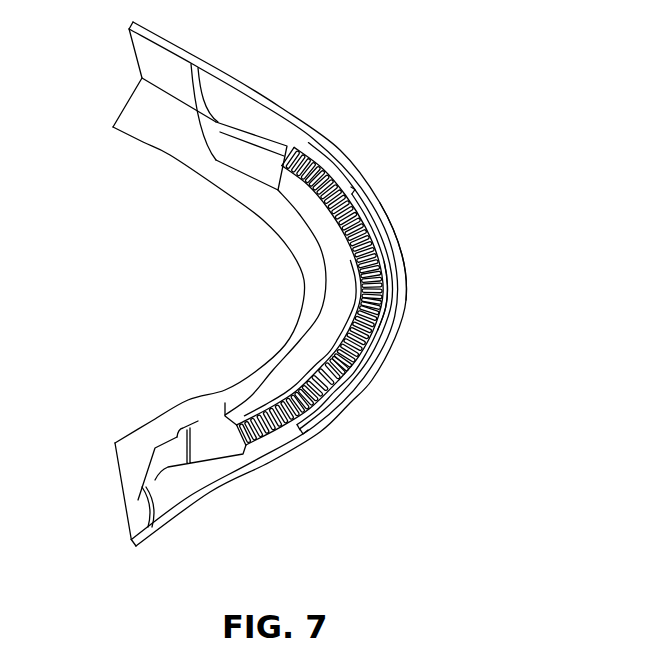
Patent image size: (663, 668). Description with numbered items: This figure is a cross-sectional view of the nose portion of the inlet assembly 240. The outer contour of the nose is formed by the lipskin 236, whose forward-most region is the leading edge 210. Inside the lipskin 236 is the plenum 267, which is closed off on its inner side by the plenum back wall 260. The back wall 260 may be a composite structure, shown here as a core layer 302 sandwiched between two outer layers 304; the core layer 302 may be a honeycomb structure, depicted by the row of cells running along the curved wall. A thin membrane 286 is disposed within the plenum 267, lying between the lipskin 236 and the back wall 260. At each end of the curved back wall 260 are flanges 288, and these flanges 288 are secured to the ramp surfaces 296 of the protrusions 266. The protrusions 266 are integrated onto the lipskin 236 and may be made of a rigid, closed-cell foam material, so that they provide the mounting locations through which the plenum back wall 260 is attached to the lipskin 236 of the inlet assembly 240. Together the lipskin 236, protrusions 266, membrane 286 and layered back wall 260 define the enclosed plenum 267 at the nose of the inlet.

The inlet assembly 240 is at (296, 58).
The protrusions 266 is at (233, 100).
The ramp surfaces 296 is at (263, 100).
The lipskin 236 is at (357, 165).
The core layer 302 is at (372, 235).
The leading edge 210 is at (405, 265).
The membrane 286 is at (392, 300).
The outer layers 304 is at (368, 332).
The plenum back wall 260 is at (294, 253).
The flanges 288 is at (246, 145).
The plenum 267 is at (280, 448).